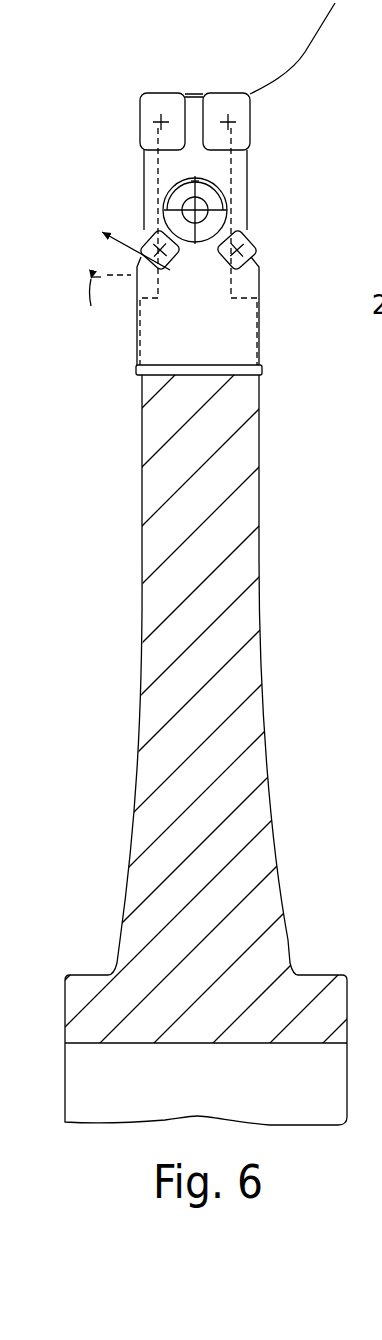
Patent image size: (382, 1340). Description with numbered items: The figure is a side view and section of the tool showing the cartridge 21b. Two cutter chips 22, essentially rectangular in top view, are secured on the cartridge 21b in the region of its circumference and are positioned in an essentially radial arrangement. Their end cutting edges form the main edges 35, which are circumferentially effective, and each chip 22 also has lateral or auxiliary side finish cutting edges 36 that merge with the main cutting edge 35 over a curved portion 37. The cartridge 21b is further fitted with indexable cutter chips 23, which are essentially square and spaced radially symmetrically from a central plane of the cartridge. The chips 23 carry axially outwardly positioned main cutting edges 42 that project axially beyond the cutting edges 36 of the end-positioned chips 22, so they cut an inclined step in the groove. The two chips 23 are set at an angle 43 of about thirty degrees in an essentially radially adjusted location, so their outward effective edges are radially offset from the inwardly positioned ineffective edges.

The cartridge 21b is at (242, 187).
The cutter chips 22 is at (167, 100).
The indexable cutter chips 23 is at (247, 242).
The main cutting edges 35 is at (179, 96).
The finish cutting edges 36 is at (140, 107).
The curved portion 37 is at (143, 96).
The main cutting edges 42 is at (141, 245).
The angle 43 is at (97, 253).